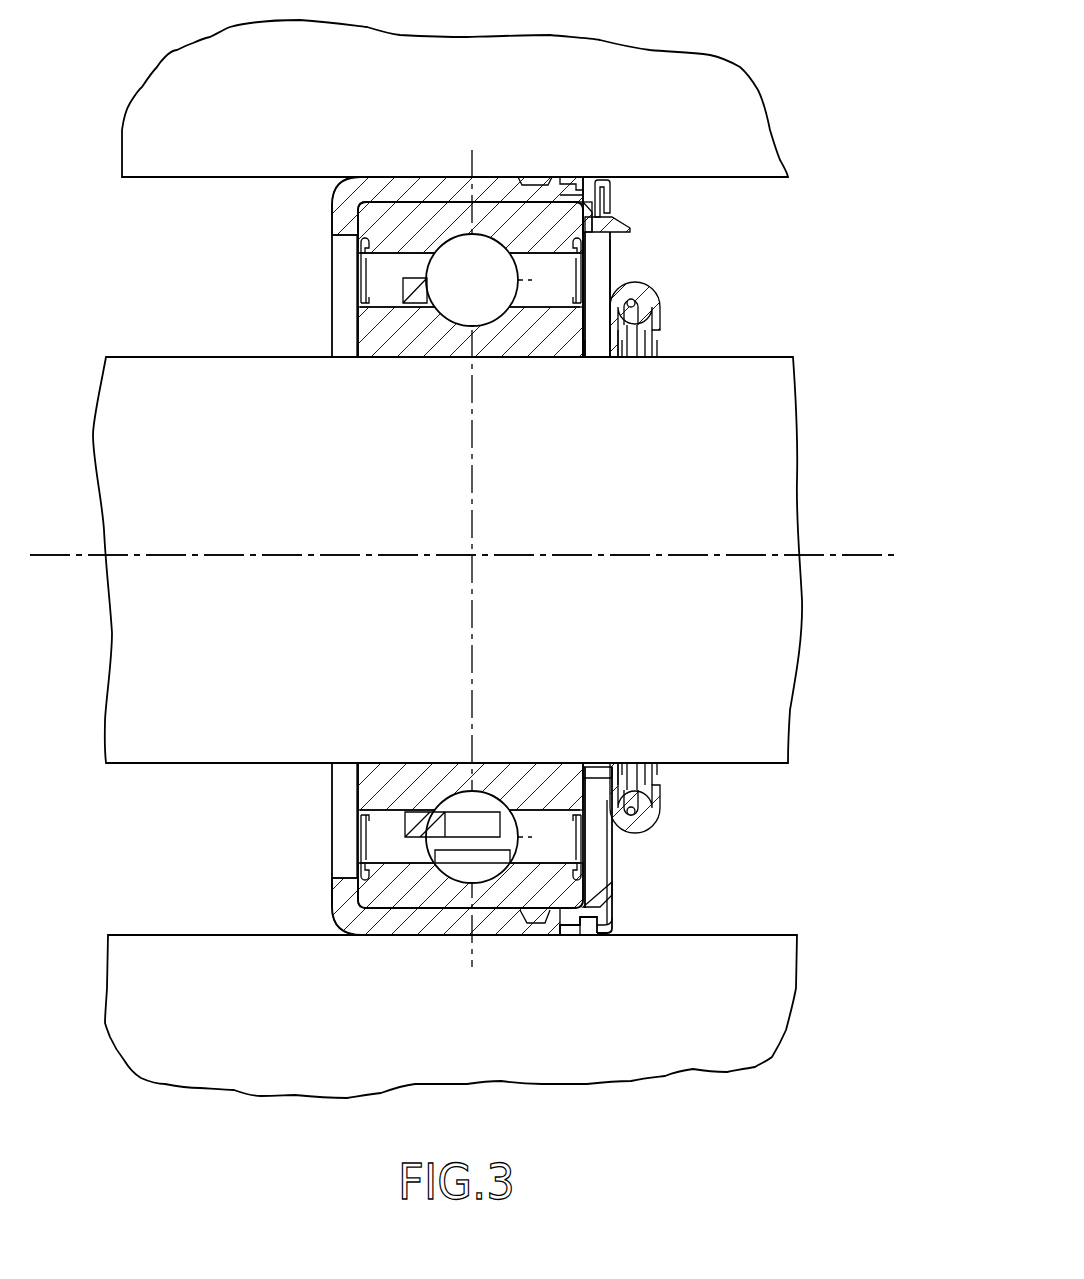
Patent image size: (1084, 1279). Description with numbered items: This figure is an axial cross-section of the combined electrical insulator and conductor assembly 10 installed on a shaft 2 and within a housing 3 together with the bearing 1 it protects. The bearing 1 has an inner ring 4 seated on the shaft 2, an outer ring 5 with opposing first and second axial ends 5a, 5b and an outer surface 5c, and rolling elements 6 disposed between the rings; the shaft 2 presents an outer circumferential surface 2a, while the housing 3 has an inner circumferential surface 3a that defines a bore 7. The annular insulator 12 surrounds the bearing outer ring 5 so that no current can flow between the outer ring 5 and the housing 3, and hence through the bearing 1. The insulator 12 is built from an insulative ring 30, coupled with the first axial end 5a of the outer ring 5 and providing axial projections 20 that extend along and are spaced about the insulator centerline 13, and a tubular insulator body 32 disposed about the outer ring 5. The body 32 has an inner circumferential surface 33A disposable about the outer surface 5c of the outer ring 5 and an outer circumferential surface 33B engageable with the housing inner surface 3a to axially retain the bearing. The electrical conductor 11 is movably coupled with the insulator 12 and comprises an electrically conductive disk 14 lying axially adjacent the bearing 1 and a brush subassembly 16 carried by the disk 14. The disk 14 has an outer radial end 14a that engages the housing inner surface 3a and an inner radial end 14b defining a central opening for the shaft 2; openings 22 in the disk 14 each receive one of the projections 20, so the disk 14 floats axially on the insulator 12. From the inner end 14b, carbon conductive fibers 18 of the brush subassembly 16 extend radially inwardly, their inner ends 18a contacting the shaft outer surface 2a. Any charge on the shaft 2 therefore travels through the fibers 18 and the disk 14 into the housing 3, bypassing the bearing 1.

The bearing 1 is at (493, 862).
The shaft 2 is at (114, 415).
The outer circumferential surface of the shaft 2a is at (158, 763).
The housing 3 is at (729, 90).
The inner circumferential surface of the housing 3a is at (167, 178).
The inner ring 4 is at (405, 747).
The outer ring 5 is at (467, 899).
The first axial end of the outer ring 5a is at (587, 900).
The second axial end of the outer ring 5b is at (357, 892).
The outer surface of the outer ring 5c is at (430, 907).
The rolling elements 6 is at (488, 805).
The bore 7 is at (753, 848).
The combined electrical insulator and conductor assembly 10 is at (431, 211).
The electrical conductor 11 is at (663, 284).
The annular insulator 12 is at (462, 211).
The centerline of the insulator 13 is at (868, 555).
The electrically conductive disk 14 is at (636, 264).
The outer radial end of the conductive disk 14a is at (597, 180).
The inner radial end of the conductive disk 14b is at (607, 337).
The brush subassembly 16 is at (690, 362).
The conductive fibers 18 is at (645, 327).
The inner ends of the conductive fibers 18a is at (618, 357).
The projections 20 is at (620, 220).
The openings of the disk 22 is at (610, 267).
The insulative ring 30 is at (585, 954).
The tubular insulator body 32 is at (499, 955).
The inner circumferential surface of the insulator body 33A is at (477, 215).
The outer circumferential surface of the insulator body 33B is at (442, 177).